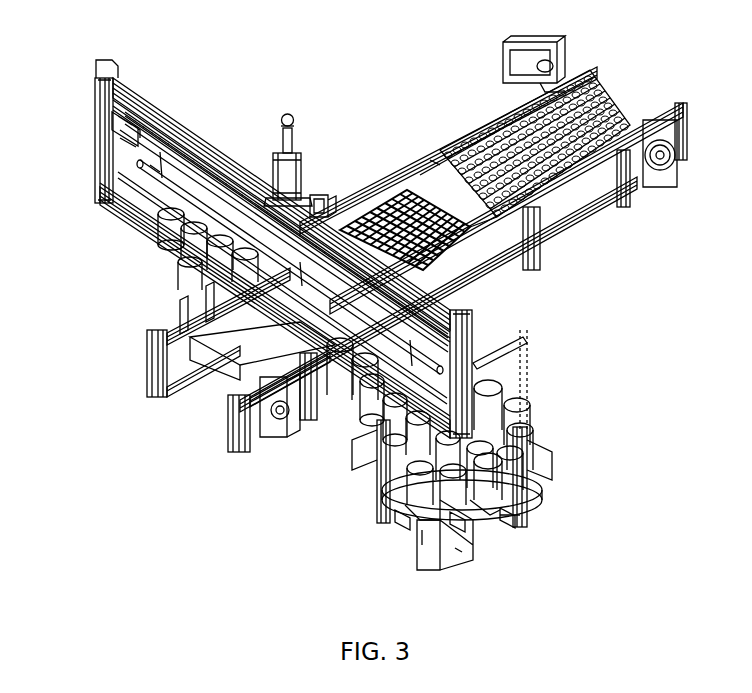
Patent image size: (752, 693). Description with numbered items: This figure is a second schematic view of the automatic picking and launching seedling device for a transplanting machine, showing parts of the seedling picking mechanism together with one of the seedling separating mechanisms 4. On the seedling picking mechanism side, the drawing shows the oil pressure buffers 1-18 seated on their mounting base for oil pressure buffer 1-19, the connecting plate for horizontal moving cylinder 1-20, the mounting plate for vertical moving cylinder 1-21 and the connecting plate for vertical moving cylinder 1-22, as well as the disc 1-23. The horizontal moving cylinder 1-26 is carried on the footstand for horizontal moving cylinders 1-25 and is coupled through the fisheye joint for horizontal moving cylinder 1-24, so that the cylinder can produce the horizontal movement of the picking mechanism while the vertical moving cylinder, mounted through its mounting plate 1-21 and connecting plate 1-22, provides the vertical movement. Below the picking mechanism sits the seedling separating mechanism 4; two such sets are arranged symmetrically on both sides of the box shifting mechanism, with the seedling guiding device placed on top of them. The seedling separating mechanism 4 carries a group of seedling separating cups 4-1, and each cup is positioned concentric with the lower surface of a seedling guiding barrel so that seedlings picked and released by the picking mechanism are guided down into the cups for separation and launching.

The oil pressure buffers 1-18 is at (100, 97).
The mounting base for oil pressure buffer 1-19 is at (133, 138).
The connecting plate for horizontal moving cylinder 1-20 is at (247, 167).
The mounting plate for vertical moving cylinder 1-21 is at (300, 167).
The connecting plate for vertical moving cylinder 1-22 is at (312, 197).
The disc 1-23 is at (477, 282).
The fisheye joint for horizontal moving cylinder 1-24 is at (378, 415).
The footstand for horizontal moving cylinders 1-25 is at (175, 298).
The horizontal moving cylinder 1-26 is at (168, 183).
The seedling separating mechanism 4 is at (520, 527).
The seedling separating cups 4-1 is at (428, 503).